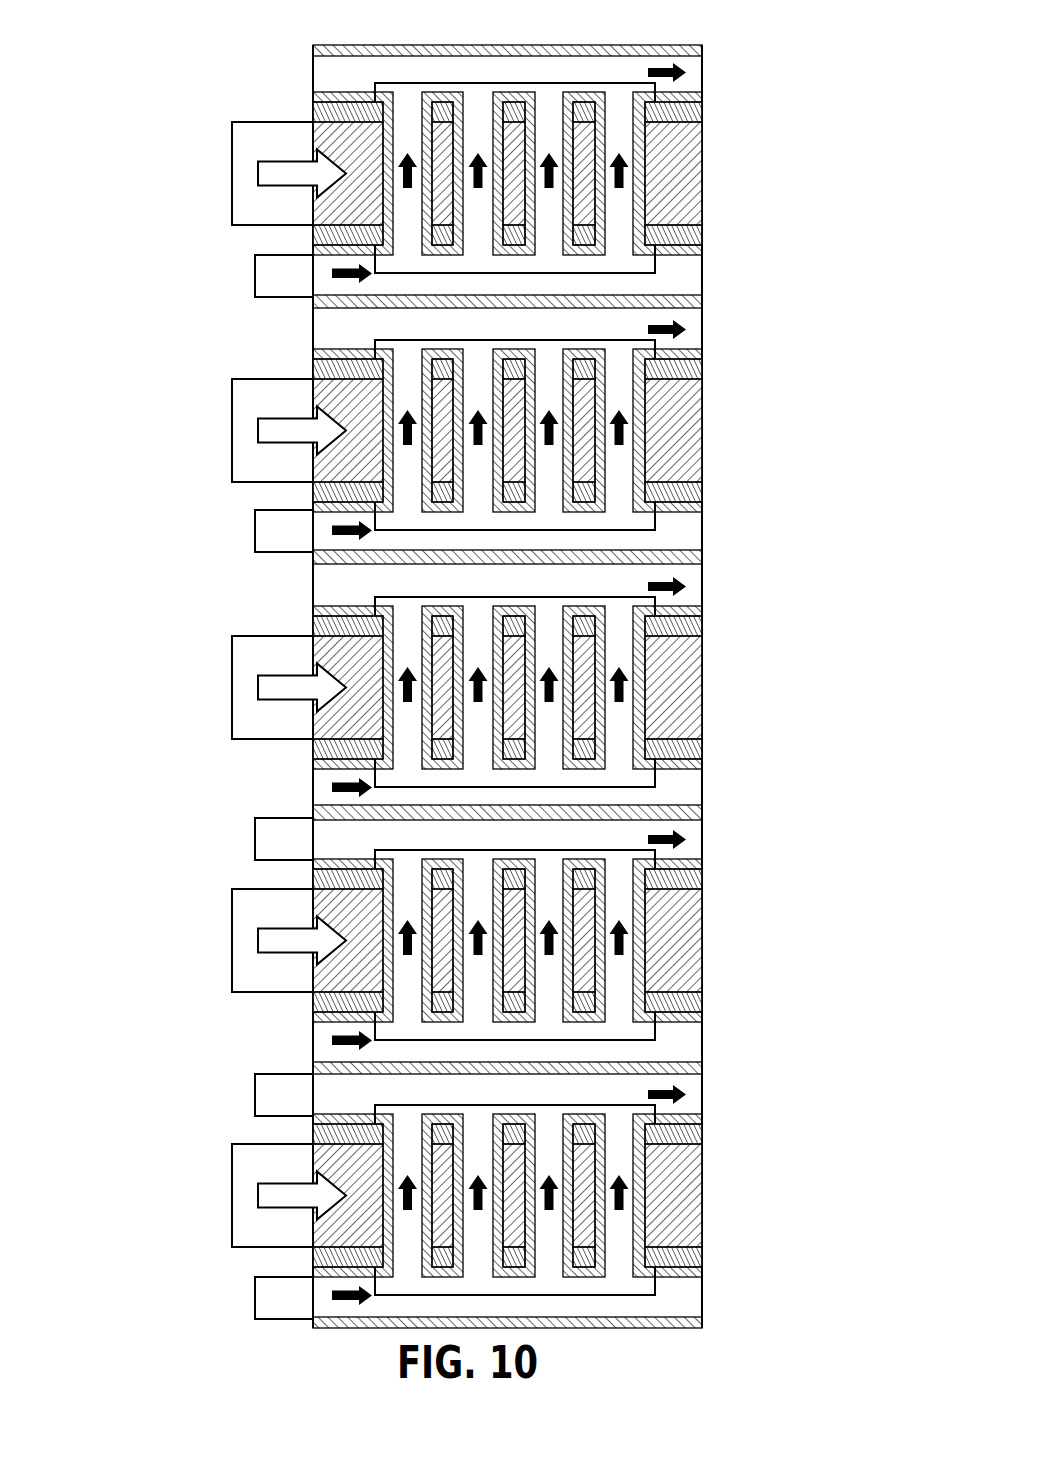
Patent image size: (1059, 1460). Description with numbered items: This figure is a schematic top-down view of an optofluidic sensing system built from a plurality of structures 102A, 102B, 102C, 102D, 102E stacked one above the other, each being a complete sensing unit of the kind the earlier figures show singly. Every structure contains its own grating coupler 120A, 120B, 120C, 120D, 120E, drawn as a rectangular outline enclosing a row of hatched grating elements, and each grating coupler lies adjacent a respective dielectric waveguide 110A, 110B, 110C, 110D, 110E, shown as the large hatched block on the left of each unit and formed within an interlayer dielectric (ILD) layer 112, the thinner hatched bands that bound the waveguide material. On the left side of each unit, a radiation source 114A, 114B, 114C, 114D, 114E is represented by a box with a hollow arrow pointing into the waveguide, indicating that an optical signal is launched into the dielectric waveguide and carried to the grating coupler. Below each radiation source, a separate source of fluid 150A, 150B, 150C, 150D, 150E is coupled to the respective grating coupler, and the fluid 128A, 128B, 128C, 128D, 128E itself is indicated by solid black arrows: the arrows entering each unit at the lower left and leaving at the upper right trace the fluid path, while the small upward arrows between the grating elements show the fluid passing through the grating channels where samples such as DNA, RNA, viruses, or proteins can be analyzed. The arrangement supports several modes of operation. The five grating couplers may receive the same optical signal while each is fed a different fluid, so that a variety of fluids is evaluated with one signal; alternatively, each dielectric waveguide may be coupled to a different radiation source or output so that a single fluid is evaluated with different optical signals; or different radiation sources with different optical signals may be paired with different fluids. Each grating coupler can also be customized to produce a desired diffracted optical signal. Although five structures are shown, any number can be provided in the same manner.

The structure 102A is at (464, 150).
The structure 102B is at (464, 409).
The structure 102C is at (464, 719).
The structure 102D is at (464, 975).
The structure 102E is at (464, 1230).
The dielectric waveguide 110A is at (333, 140).
The dielectric waveguide 110B is at (440, 424).
The dielectric waveguide 110C is at (440, 681).
The dielectric waveguide 110D is at (427, 944).
The dielectric waveguide 110E is at (409, 1198).
The interlayer dielectric (ILD) layer 112 is at (683, 108).
The radiation source 114A is at (247, 148).
The radiation source 114B is at (215, 430).
The radiation source 114C is at (215, 687).
The radiation source 114D is at (215, 940).
The radiation source 114E is at (215, 1195).
The grating coupler 120A is at (477, 83).
The grating coupler 120B is at (583, 440).
The grating coupler 120C is at (583, 696).
The grating coupler 120D is at (585, 953).
The grating coupler 120E is at (528, 1240).
The fluid 128A is at (625, 173).
The fluid 128B is at (620, 427).
The fluid 128C is at (620, 684).
The fluid 128D is at (620, 937).
The fluid 128E is at (620, 1193).
The source of fluid 150A is at (278, 272).
The source of fluid 150B is at (199, 532).
The source of fluid 150C is at (199, 841).
The source of fluid 150D is at (199, 1097).
The source of fluid 150E is at (200, 1300).